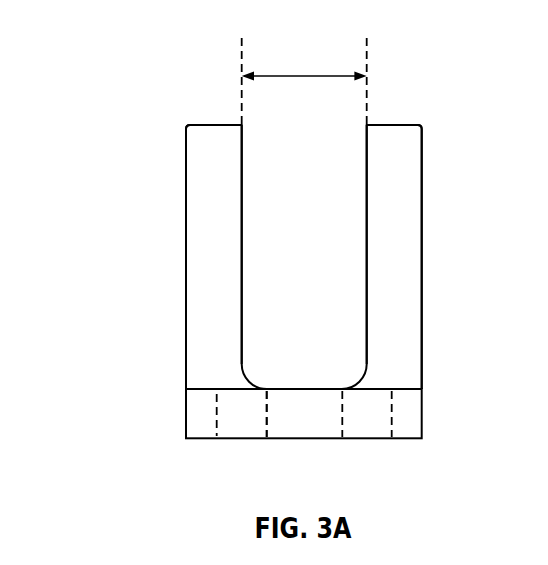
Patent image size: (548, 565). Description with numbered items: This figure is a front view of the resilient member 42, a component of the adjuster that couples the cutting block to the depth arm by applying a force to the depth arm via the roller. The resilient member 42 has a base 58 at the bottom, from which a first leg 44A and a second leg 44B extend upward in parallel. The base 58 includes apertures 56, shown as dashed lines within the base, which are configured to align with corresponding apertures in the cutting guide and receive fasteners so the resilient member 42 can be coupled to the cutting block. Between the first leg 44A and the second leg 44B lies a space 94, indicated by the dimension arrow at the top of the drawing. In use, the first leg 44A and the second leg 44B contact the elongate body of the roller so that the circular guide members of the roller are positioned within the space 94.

The resilient member 42 is at (104, 55).
The first leg 44A is at (200, 210).
The second leg 44B is at (413, 211).
The base 58 is at (411, 414).
The apertures 56 is at (253, 412).
The space 94 is at (303, 76).